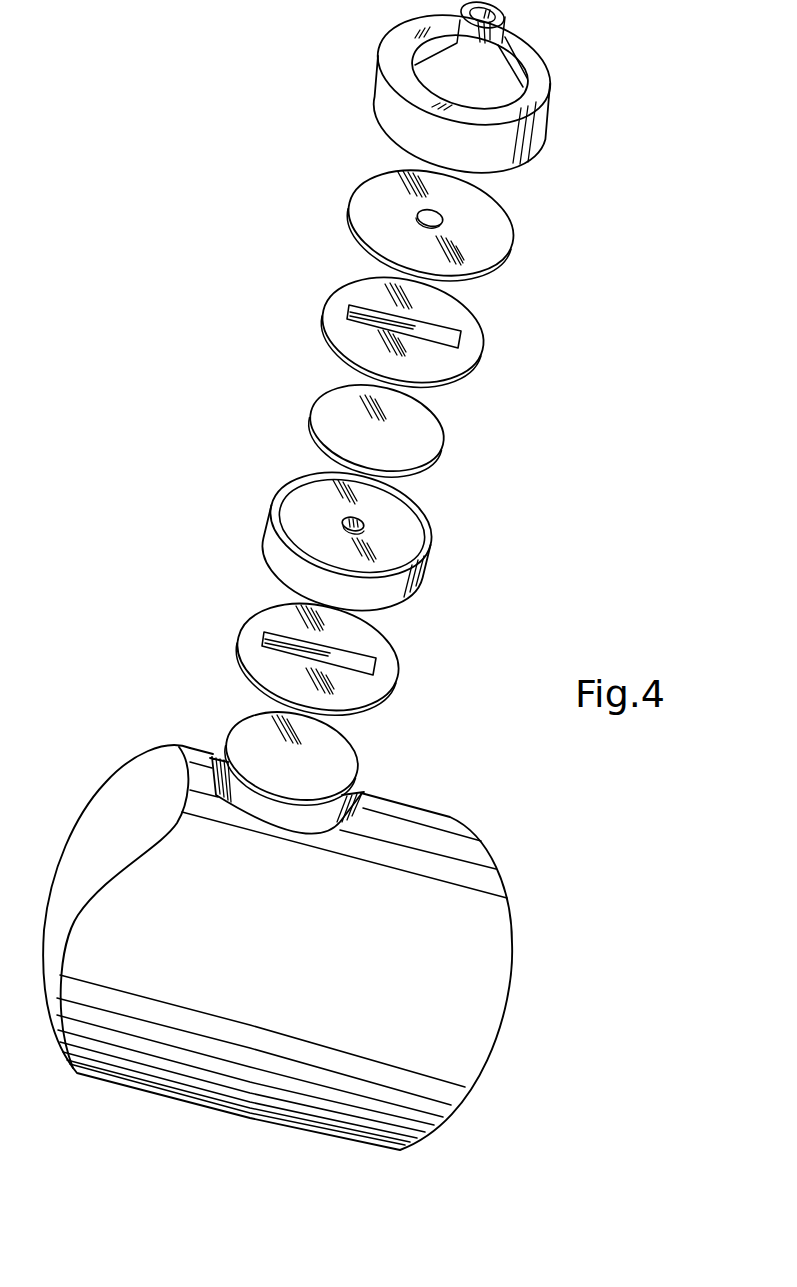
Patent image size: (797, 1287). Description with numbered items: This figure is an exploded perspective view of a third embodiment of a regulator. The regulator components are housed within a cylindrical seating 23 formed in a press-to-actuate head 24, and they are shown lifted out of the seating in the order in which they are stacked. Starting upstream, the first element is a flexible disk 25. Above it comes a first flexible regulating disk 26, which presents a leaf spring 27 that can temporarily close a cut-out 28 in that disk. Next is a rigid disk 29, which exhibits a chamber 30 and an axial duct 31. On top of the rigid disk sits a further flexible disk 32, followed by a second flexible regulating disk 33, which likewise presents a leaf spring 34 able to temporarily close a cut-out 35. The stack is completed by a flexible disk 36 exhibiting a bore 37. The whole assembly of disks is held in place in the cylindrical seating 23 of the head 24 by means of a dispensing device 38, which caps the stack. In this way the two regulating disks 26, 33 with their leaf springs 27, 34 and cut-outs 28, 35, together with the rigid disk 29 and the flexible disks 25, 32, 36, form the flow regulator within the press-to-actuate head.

The cylindrical seating 23 is at (350, 795).
The press-to-actuate head 24 is at (482, 852).
The flexible disk 25 is at (342, 752).
The first flexible regulating disk 26 is at (380, 655).
The leaf spring 27 is at (262, 648).
The cut-out 28 is at (262, 634).
The rigid disk 29 is at (285, 487).
The chamber 30 is at (405, 525).
The axial duct 31 is at (357, 522).
The flexible disk 32 is at (433, 430).
The second flexible regulating disk 33 is at (470, 320).
The leaf spring 34 is at (348, 321).
The cut-out 35 is at (347, 303).
The flexible disk 36 is at (498, 222).
The bore 37 is at (420, 213).
The dispensing device 38 is at (538, 73).